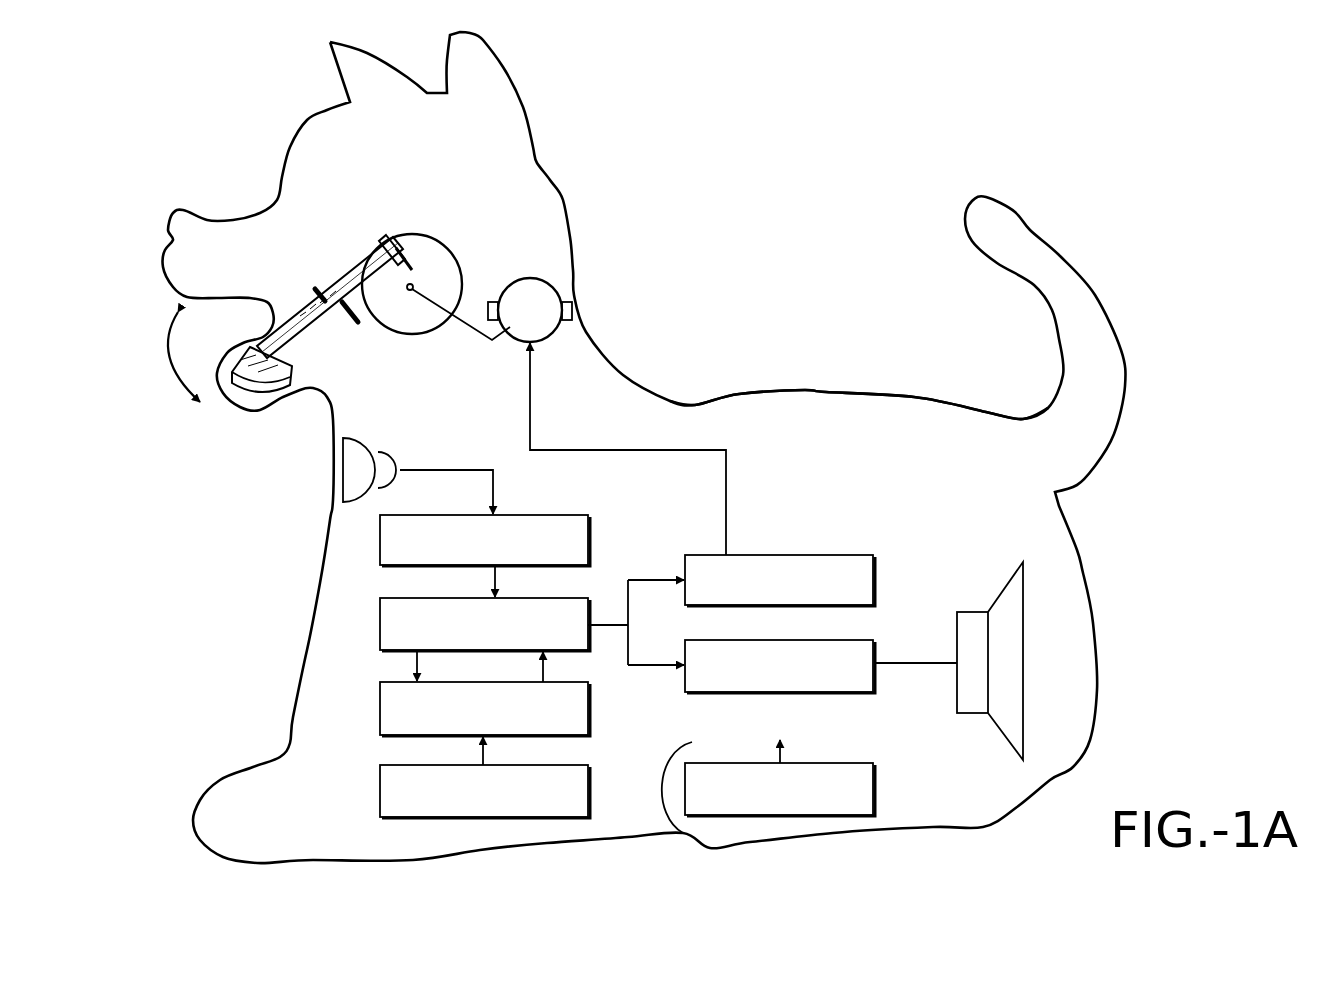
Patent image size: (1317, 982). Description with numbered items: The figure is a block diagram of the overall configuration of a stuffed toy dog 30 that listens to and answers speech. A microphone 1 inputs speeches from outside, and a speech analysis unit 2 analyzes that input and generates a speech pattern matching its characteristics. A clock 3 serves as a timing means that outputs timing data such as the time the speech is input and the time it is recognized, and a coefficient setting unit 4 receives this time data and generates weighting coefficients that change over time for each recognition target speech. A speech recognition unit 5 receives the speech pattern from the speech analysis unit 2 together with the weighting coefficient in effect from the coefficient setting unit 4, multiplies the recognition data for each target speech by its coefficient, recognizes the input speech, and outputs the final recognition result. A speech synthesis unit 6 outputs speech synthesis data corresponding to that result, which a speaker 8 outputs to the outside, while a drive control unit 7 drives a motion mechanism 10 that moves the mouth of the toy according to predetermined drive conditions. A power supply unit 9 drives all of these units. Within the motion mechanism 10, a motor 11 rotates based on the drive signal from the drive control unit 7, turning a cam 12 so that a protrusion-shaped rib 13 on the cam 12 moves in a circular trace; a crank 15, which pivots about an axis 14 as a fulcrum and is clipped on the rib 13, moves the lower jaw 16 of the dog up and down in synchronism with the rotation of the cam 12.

The microphone 1 is at (343, 467).
The speech analysis unit 2 is at (380, 540).
The clock 3 is at (380, 792).
The coefficient setting unit 4 is at (380, 710).
The speech recognition unit 5 is at (380, 625).
The speech synthesis unit 6 is at (697, 693).
The drive control unit 7 is at (797, 555).
The speaker 8 is at (1023, 663).
The power supply unit 9 is at (875, 788).
The motion mechanism 10 is at (396, 170).
The motor 11 is at (531, 281).
The cam 12 is at (443, 265).
The rib 13 is at (413, 276).
The axis 14 is at (353, 323).
The crank 15 is at (350, 284).
The lower jaw 16 is at (250, 386).
The stuffed toy dog 30 is at (826, 392).